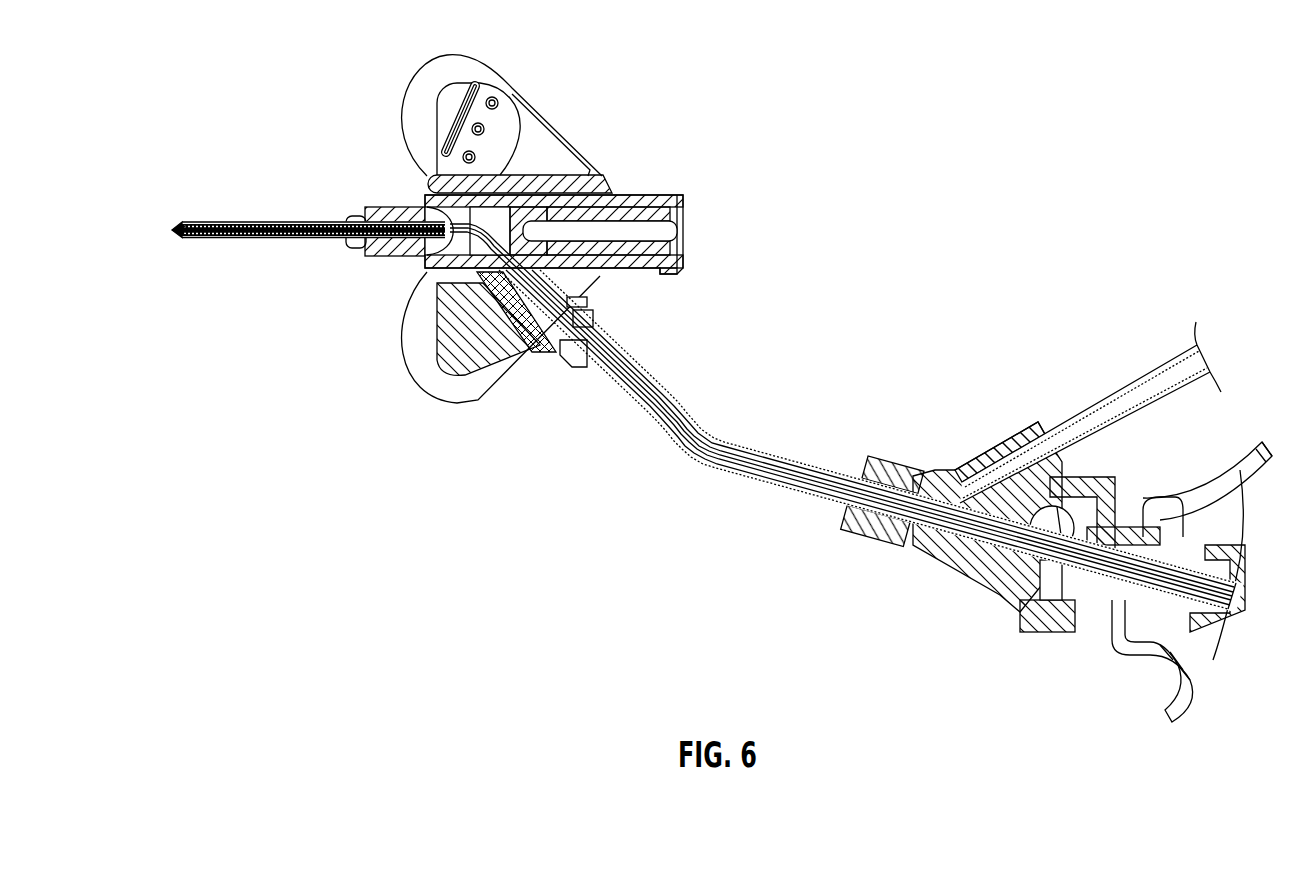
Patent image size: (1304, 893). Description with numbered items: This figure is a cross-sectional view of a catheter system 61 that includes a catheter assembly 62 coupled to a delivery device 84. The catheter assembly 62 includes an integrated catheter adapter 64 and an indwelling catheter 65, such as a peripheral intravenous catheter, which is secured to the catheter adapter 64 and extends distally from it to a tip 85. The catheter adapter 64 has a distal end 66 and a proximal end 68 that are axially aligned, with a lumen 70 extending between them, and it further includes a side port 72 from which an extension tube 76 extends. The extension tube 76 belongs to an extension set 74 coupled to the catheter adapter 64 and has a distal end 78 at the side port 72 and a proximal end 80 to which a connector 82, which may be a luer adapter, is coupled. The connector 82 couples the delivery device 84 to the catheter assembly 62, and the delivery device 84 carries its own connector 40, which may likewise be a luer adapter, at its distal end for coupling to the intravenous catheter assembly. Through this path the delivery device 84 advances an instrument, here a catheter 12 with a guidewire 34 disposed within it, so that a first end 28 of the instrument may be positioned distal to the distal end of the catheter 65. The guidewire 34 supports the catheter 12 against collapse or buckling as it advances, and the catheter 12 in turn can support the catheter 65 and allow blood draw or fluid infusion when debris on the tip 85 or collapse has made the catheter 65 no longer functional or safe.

The catheter 12 is at (482, 213).
The first end of the instrument 28 is at (175, 222).
The guidewire 34 is at (713, 440).
The connector 40 is at (1157, 642).
The catheter system 61 is at (933, 262).
The catheter assembly 62 is at (392, 188).
The catheter adapter 64 is at (603, 170).
The catheter 65 is at (273, 222).
The distal end 66 is at (383, 250).
The proximal end 68 is at (677, 193).
The lumen 70 is at (420, 293).
The side port 72 is at (570, 367).
The extension set 74 is at (822, 445).
The extension tube 76 is at (797, 490).
The distal end 78 is at (545, 300).
The proximal end 80 is at (910, 497).
The connector 82 is at (990, 573).
The delivery device 84 is at (797, 130).
The tip 85 is at (188, 238).